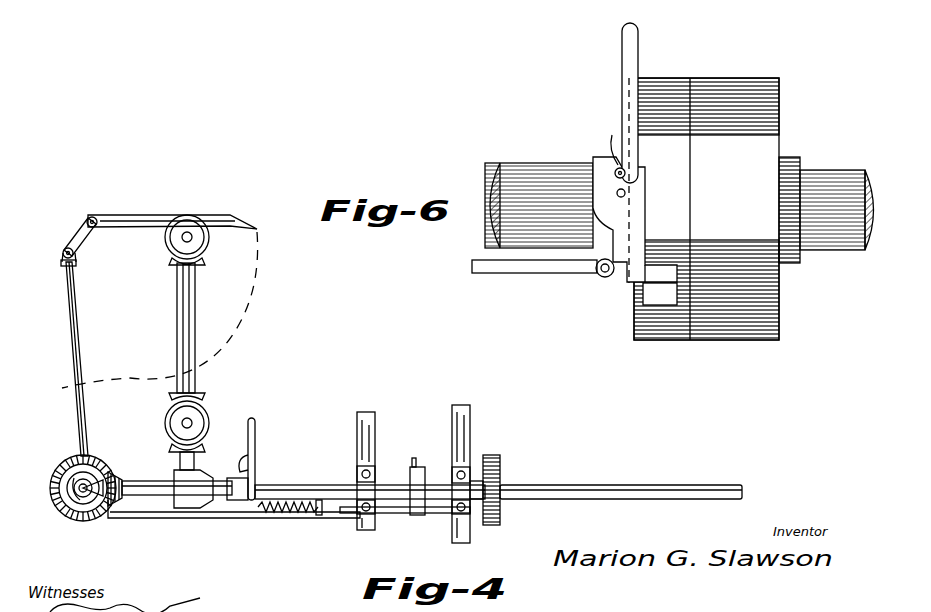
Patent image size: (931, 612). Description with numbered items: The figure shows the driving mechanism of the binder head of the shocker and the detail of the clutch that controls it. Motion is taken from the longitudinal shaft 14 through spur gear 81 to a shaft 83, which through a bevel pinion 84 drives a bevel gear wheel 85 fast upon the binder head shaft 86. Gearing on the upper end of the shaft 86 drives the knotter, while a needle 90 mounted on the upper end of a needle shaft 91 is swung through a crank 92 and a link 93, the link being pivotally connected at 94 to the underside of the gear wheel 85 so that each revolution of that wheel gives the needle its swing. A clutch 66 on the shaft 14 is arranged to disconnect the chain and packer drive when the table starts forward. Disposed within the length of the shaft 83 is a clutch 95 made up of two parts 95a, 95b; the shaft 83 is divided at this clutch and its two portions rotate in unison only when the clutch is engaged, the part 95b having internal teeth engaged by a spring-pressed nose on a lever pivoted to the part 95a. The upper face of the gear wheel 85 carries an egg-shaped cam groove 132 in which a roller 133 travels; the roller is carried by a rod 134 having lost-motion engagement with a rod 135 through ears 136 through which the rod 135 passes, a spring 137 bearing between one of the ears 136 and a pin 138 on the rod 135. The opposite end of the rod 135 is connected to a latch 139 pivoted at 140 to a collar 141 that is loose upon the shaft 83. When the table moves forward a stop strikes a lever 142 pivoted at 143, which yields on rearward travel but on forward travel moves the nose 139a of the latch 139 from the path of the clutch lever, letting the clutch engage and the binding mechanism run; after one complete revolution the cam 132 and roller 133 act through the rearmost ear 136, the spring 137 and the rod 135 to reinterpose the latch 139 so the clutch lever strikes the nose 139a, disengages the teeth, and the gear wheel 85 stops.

In FIG. 4, the longitudinal shaft 14 is at (561, 486).
In FIG. 4, the clutch 66 is at (248, 462).
In FIG. 4, the spur gear 81 is at (500, 463).
In FIG. 6, the shaft 83 is at (679, 206).
In FIG. 4, the shaft 83 is at (148, 480).
In FIG. 4, the bevel pinion 84 is at (118, 478).
In FIG. 4, the bevel gear wheel 85 is at (77, 515).
In FIG. 4, the binder head shaft 86 is at (56, 507).
In FIG. 4, the needle 90 is at (140, 215).
In FIG. 4, the needle shaft 91 is at (92, 217).
In FIG. 4, the crank 92 is at (85, 234).
In FIG. 4, the link 93 is at (80, 348).
In FIG. 4, the pivotal connection 94 is at (100, 511).
In FIG. 6, the clutch 95 is at (706, 225).
In FIG. 4, the clutch 95 is at (450, 474).
In FIG. 6, the clutch part 95a is at (658, 152).
In FIG. 6, the clutch part 95b is at (759, 205).
In FIG. 4, the cam groove 132 is at (58, 468).
In FIG. 4, the roller 133 is at (88, 470).
In FIG. 4, the rod 134 is at (196, 520).
In FIG. 4, the rod 135 is at (346, 516).
In FIG. 4, the ears 136 is at (276, 488).
In FIG. 4, the spring 137 is at (291, 516).
In FIG. 4, the pin 138 is at (321, 516).
In FIG. 6, the latch 139 is at (618, 210).
In FIG. 4, the latch 139 is at (411, 512).
In FIG. 6, the nose 139a is at (670, 252).
In FIG. 6, the pivot 140 is at (630, 183).
In FIG. 6, the collar 141 is at (600, 278).
In FIG. 6, the lever 142 is at (640, 57).
In FIG. 6, the pivot 143 is at (599, 135).